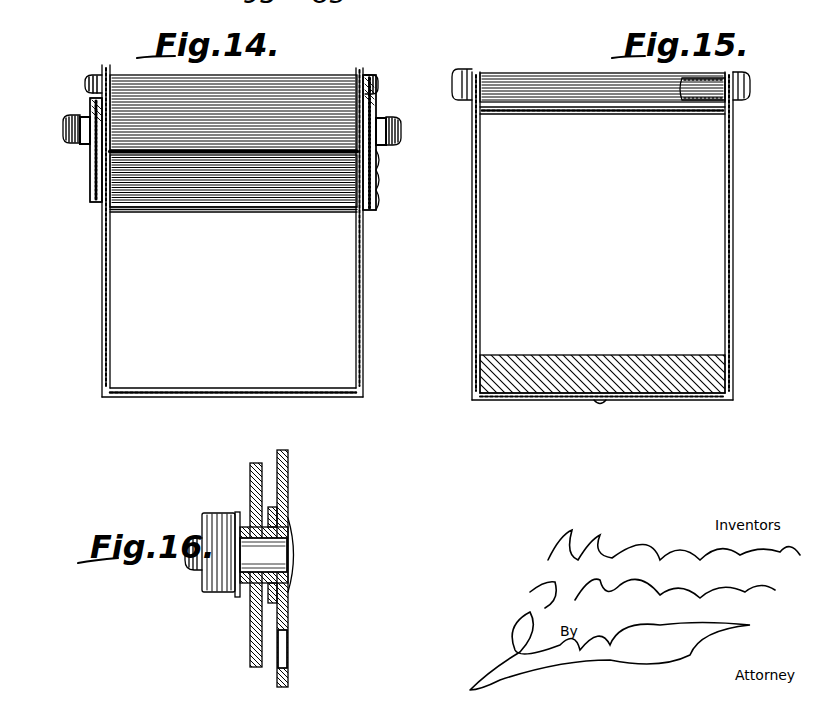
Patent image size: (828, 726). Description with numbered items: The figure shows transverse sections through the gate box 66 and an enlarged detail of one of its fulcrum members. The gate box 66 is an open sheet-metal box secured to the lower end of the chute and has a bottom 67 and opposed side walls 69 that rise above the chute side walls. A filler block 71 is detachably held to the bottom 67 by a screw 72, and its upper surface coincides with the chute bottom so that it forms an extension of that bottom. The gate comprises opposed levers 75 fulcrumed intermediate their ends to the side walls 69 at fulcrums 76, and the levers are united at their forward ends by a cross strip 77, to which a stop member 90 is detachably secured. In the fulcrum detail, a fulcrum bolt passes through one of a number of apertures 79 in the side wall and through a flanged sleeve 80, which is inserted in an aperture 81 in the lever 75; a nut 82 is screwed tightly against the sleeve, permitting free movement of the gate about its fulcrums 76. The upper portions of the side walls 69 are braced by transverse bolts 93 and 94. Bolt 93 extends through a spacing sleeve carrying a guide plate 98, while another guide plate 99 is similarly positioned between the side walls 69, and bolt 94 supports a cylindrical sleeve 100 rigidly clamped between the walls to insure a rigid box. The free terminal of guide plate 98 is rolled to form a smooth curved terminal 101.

In FIG. 14, the gate box 66 is at (249, 255).
In FIG. 14, the bottom 67 is at (202, 398).
In FIG. 15, the bottom 67 is at (700, 401).
In FIG. 14, the side walls 69 is at (102, 295).
In FIG. 15, the side walls 69 is at (733, 261).
In FIG. 15, the filler block 71 is at (556, 376).
In FIG. 15, the screw 72 is at (600, 405).
In FIG. 14, the levers 75 is at (90, 103).
In FIG. 16, the levers 75 is at (251, 638).
In FIG. 14, the fulcrums 76 is at (82, 146).
In FIG. 14, the cross strip 77 is at (205, 212).
In FIG. 14, the apertures 79 is at (100, 172).
In FIG. 16, the apertures 79 is at (272, 556).
In FIG. 16, the flanged sleeve 80 is at (251, 527).
In FIG. 16, the aperture 81 is at (254, 476).
In FIG. 16, the nut 82 is at (212, 590).
In FIG. 14, the stop member 90 is at (310, 182).
In FIG. 14, the bolt 93 is at (88, 80).
In FIG. 15, the bolt 94 is at (713, 93).
In FIG. 14, the guide plate 98 is at (128, 85).
In FIG. 15, the guide plate 99 is at (562, 114).
In FIG. 15, the cylindrical sleeve 100 is at (521, 82).
In FIG. 14, the curved terminal 101 is at (243, 154).